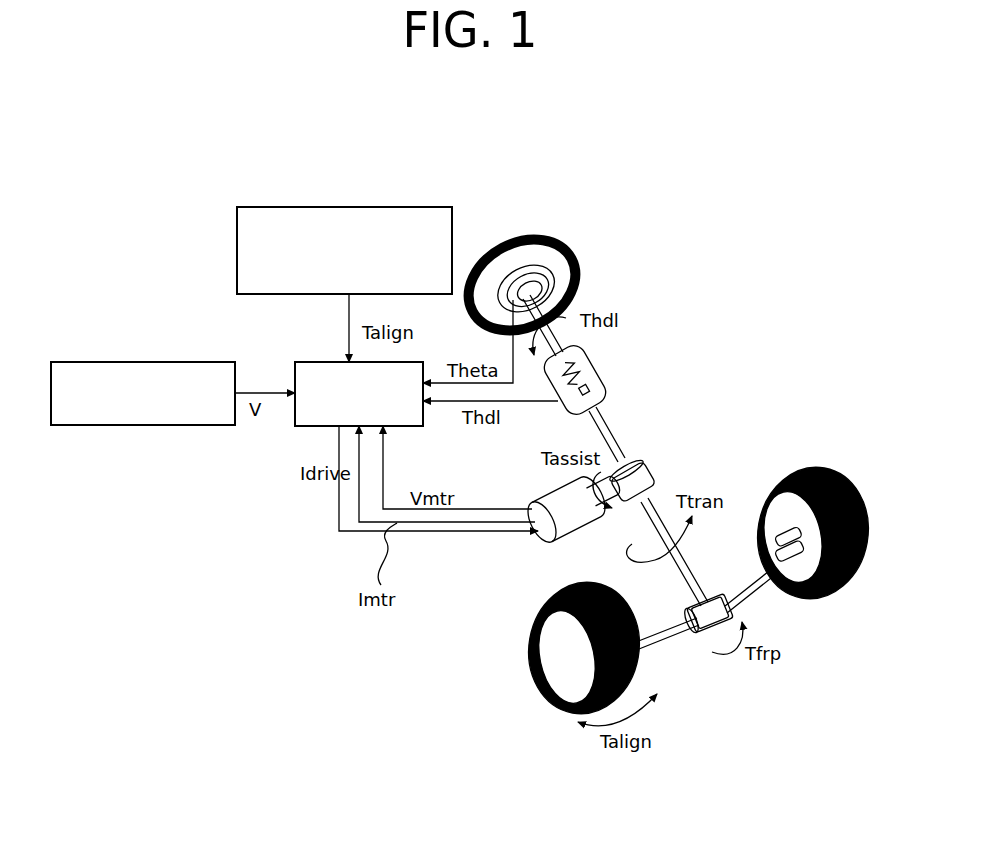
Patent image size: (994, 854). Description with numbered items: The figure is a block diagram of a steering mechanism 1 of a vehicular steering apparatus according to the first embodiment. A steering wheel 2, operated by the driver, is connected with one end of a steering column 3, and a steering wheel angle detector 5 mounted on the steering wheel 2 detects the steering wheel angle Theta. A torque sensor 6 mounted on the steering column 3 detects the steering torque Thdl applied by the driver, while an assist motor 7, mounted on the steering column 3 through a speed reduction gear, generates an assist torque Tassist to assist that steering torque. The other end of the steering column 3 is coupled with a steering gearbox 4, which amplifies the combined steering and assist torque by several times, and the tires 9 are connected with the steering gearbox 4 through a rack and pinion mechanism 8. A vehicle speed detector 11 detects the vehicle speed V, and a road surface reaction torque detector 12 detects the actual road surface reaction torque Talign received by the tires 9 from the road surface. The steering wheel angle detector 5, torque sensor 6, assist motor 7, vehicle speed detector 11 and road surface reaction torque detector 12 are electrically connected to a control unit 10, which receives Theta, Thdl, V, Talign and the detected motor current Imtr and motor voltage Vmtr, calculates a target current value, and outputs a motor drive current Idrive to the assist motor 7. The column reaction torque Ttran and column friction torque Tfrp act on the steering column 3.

The steering mechanism 1 is at (692, 278).
The steering wheel 2 is at (560, 241).
The steering column 3 is at (600, 427).
The steering gearbox 4 is at (712, 603).
The steering wheel angle detector 5 is at (583, 287).
The torque sensor 6 is at (597, 366).
The assist motor 7 is at (542, 545).
The rack and pinion mechanism 8 is at (675, 641).
The tires 9 is at (845, 585).
The control unit 10 is at (295, 370).
The vehicle speed detector 11 is at (137, 425).
The road surface reaction torque detector 12 is at (350, 207).